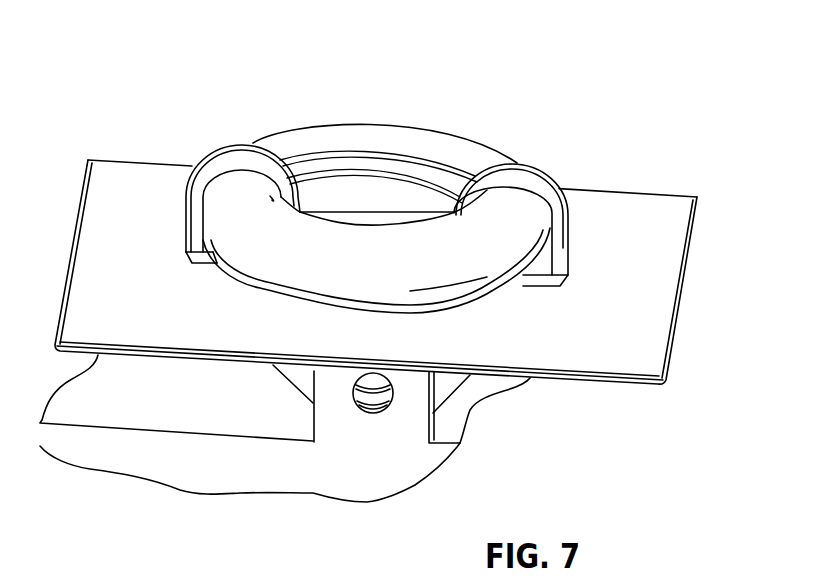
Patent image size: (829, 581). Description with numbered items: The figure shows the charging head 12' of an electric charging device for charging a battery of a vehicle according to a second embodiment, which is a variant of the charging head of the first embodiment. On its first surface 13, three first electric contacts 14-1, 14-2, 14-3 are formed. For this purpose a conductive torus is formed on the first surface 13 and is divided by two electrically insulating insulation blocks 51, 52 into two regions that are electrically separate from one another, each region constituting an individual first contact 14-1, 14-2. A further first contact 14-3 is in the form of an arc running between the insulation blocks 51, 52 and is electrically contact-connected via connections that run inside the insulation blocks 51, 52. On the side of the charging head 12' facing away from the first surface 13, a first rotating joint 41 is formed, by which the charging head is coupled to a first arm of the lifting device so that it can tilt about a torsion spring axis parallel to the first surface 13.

The first surface 13 is at (652, 211).
The first electric contact 14-1 is at (377, 134).
The first electric contact 14-2 is at (307, 266).
The further first contact 14-3 is at (437, 177).
The insulation block 51 is at (533, 183).
The insulation block 52 is at (223, 162).
The first rotating joint 41 is at (372, 400).
The charging head 12' is at (393, 428).